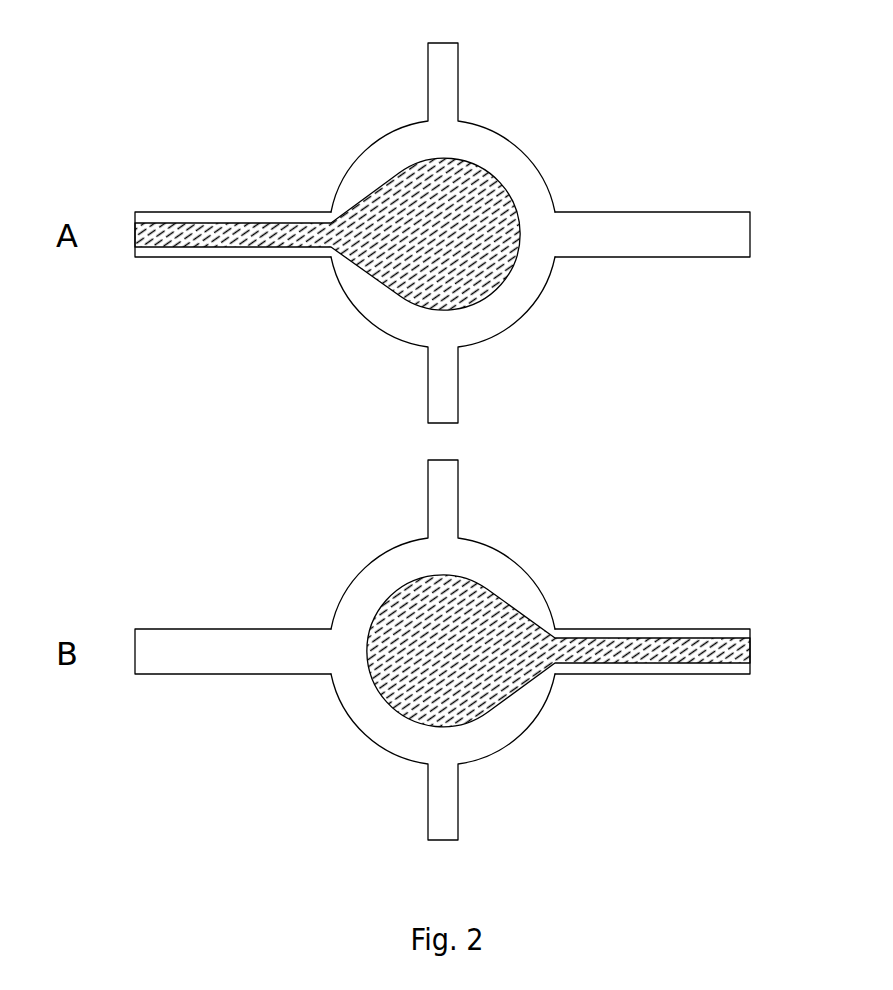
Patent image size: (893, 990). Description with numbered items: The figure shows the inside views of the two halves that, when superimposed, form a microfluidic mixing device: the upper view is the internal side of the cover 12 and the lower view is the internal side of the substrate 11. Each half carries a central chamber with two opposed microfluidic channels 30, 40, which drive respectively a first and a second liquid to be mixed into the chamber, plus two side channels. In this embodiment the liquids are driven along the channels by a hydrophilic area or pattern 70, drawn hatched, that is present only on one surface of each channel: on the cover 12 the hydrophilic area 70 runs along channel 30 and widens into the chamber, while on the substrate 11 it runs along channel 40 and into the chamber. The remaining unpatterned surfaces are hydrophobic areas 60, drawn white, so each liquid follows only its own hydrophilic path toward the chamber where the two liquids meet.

In FIG. 2B, the substrate 11 is at (540, 538).
In FIG. 2A, the cover 12 is at (372, 118).
In FIG. 2A, the microfluidic channel 30 is at (232, 210).
In FIG. 2B, the microfluidic channel 30 is at (237, 673).
In FIG. 2A, the microfluidic channel 40 is at (585, 257).
In FIG. 2B, the microfluidic channel 40 is at (620, 673).
In FIG. 2A, the hydrophobic area 60 is at (500, 175).
In FIG. 2B, the hydrophobic area 60 is at (357, 593).
In FIG. 2A, the hydrophilic area 70 is at (342, 255).
In FIG. 2B, the hydrophilic area 70 is at (500, 663).